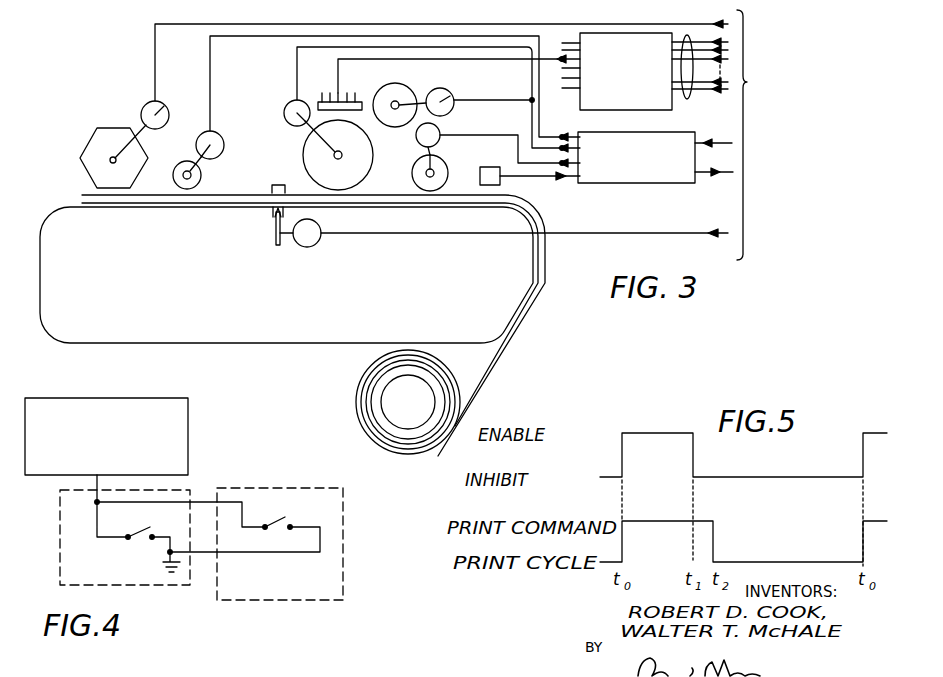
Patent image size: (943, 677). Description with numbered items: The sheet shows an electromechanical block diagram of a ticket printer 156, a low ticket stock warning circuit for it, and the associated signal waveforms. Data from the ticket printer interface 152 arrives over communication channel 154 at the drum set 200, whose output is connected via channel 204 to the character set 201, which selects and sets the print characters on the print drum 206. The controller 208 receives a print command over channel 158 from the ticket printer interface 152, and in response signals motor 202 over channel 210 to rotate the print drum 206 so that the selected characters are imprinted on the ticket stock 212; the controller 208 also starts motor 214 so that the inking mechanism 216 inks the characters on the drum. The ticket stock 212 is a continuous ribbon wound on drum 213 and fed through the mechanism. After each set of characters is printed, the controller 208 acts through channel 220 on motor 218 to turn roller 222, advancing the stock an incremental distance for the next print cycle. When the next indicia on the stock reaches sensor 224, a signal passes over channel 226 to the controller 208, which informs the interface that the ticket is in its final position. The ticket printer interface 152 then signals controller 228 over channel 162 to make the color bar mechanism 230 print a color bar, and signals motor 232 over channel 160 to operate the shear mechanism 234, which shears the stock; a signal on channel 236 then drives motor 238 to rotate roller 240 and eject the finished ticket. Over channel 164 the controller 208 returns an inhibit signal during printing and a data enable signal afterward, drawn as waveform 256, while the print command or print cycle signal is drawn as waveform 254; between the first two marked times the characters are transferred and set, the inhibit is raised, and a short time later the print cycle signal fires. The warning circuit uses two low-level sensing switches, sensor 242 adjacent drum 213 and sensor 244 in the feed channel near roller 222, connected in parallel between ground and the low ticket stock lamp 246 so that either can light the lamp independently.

In FIG. 3, the ticket printer interface 152 is at (810, 135).
In FIG. 3, the communication channel 154 is at (684, 100).
In FIG. 3, the ticket printer 156 is at (534, 309).
In FIG. 3, the channel 158 is at (733, 138).
In FIG. 3, the channel 160 is at (664, 230).
In FIG. 3, the channel 162 is at (154, 45).
In FIG. 3, the channel 164 is at (732, 167).
In FIG. 3, the drum set 200 is at (640, 106).
In FIG. 3, the character set 201 is at (318, 101).
In FIG. 3, the motor 202 is at (280, 128).
In FIG. 3, the channel 204 is at (461, 64).
In FIG. 3, the print drum 206 is at (304, 172).
In FIG. 3, the controller 208 is at (653, 179).
In FIG. 3, the channel 210 is at (530, 77).
In FIG. 3, the ticket stock 212 is at (497, 369).
In FIG. 3, the drum 213 is at (424, 413).
In FIG. 3, the motor 214 is at (455, 98).
In FIG. 3, the inking mechanism 216 is at (390, 88).
In FIG. 3, the motor 218 is at (417, 147).
In FIG. 3, the channel 220 is at (508, 133).
In FIG. 3, the roller 222 is at (412, 181).
In FIG. 3, the sensor 224 is at (500, 166).
In FIG. 3, the channel 226 is at (514, 180).
In FIG. 3, the controller 228 is at (141, 110).
In FIG. 3, the color bar mechanism 230 is at (84, 143).
In FIG. 3, the motor 232 is at (318, 226).
In FIG. 3, the shear mechanism 234 is at (275, 231).
In FIG. 3, the channel 236 is at (210, 80).
In FIG. 3, the motor 238 is at (225, 148).
In FIG. 3, the roller 240 is at (204, 177).
In FIG. 4, the sensor 242 is at (175, 514).
In FIG. 4, the sensor 244 is at (272, 518).
In FIG. 4, the low ticket stock lamp 246 is at (110, 470).
In FIG. 5, the print command signal waveform 254 is at (713, 544).
In FIG. 5, the inhibit/enable signal waveform 256 is at (779, 476).